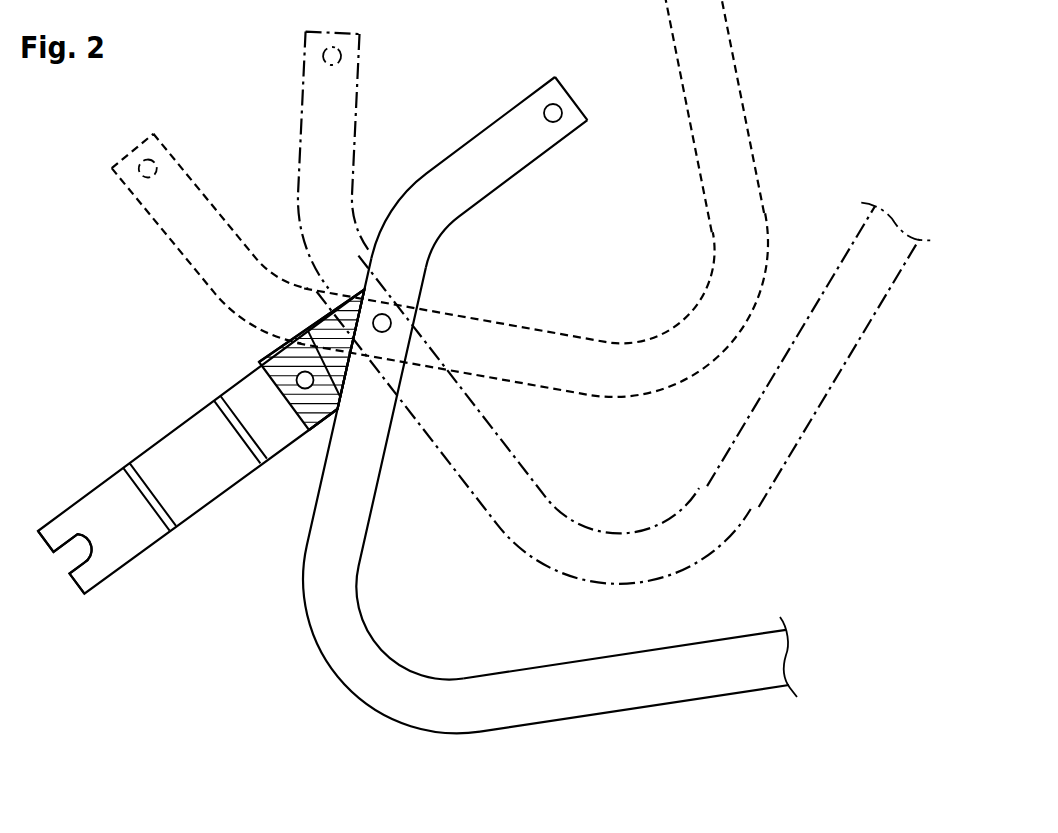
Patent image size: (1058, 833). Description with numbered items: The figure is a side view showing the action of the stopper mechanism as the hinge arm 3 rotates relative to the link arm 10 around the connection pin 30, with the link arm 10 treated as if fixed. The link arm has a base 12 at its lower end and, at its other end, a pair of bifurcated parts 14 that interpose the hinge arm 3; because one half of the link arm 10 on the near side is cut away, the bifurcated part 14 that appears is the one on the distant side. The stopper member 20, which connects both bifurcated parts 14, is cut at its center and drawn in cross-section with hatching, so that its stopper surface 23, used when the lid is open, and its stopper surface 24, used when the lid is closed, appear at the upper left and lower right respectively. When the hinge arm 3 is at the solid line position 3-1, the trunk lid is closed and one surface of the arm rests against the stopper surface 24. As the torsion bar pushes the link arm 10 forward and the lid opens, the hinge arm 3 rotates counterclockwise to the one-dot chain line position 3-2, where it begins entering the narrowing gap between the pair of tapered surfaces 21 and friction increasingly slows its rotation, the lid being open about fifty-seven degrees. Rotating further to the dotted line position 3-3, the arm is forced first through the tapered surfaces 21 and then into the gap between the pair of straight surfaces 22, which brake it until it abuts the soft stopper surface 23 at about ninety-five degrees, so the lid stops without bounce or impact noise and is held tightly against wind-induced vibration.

The hinge arm 3 is at (550, 429).
The solid line position of hinge arm 3-1 is at (633, 703).
The one-dot chain line position of hinge arm 3-2 is at (793, 445).
The dotted line position of hinge arm 3-3 is at (737, 60).
The link arm 10 is at (245, 383).
The base 12 is at (127, 547).
The bifurcated part 14 is at (235, 382).
The stopper member 20 is at (305, 359).
The tapered surface 21 is at (325, 327).
The straight surface 22 is at (307, 333).
The stopper surface 23 is at (298, 340).
The stopper surface 24 is at (345, 400).
The connection pin 30 is at (385, 312).